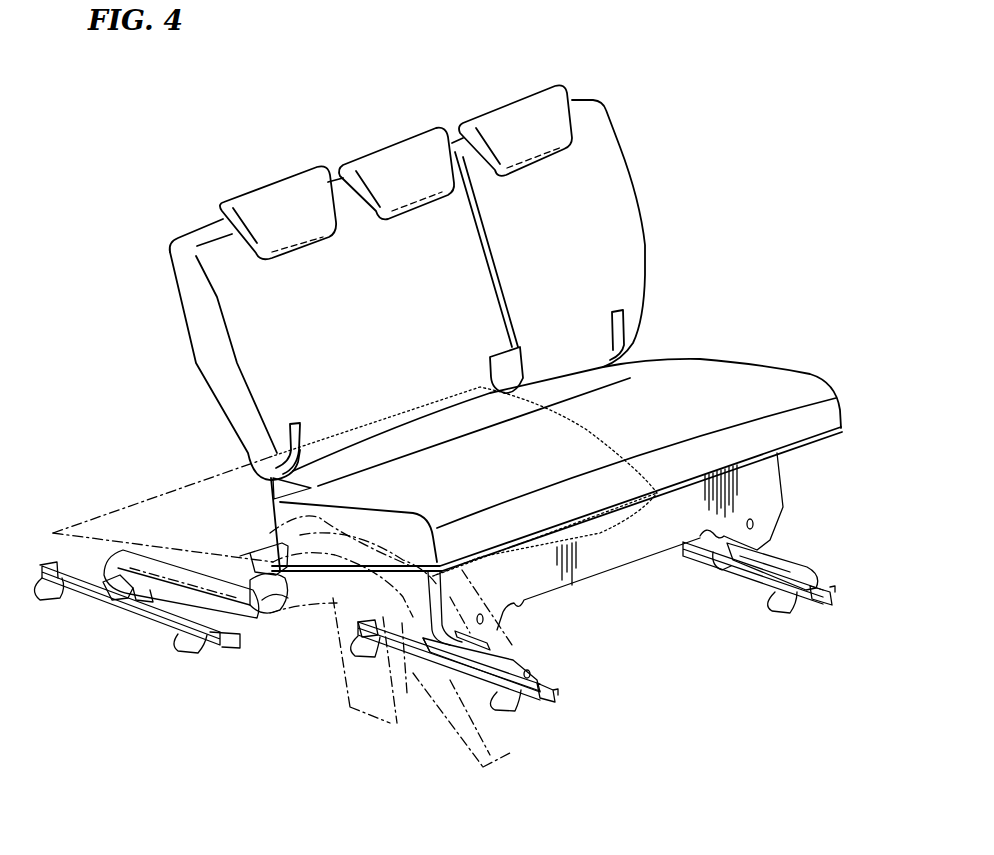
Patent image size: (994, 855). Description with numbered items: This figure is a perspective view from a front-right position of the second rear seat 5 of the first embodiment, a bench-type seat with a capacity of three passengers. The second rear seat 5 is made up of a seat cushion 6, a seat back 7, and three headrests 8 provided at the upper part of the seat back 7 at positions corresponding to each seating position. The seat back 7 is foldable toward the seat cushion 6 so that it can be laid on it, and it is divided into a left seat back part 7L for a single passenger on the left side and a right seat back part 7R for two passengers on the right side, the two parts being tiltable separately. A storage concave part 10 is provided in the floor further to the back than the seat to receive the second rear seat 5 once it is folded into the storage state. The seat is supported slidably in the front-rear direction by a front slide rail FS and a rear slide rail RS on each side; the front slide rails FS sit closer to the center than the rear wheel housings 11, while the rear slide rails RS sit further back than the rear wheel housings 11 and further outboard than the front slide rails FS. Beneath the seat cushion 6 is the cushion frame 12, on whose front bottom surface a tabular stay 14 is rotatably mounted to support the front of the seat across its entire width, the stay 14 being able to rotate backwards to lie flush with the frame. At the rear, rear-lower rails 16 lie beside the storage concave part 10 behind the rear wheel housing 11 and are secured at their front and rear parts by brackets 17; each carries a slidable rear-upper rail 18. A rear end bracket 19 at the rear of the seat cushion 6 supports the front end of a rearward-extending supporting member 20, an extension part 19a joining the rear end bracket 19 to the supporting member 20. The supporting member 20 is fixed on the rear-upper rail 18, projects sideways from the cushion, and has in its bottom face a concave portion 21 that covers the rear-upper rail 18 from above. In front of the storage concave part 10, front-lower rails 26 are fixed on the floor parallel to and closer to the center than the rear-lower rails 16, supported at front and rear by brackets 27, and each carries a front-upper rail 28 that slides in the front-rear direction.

The second rear seat 5 is at (748, 165).
The seat cushion 6 is at (797, 373).
The seat back 7 is at (643, 218).
The left seat back part 7L is at (620, 142).
The right seat back part 7R is at (175, 290).
The headrest 8 is at (270, 183).
The storage concave part 10 is at (93, 505).
The rear wheel housing 11 is at (160, 652).
The cushion frame 12 is at (812, 438).
The stay 14 is at (774, 498).
The rear-lower rail 16 is at (87, 588).
The bracket 17 is at (33, 602).
The rear-upper rail 18 is at (127, 588).
The rear end bracket 19 is at (287, 603).
The extension part 19a is at (268, 612).
The supporting member 20 is at (180, 567).
The concave portion 21 is at (133, 590).
The front-lower rail 26 is at (560, 707).
The bracket 27 is at (355, 650).
The front-upper rail 28 is at (513, 663).
The rear slide rail RS is at (155, 546).
The front slide rail FS is at (753, 597).